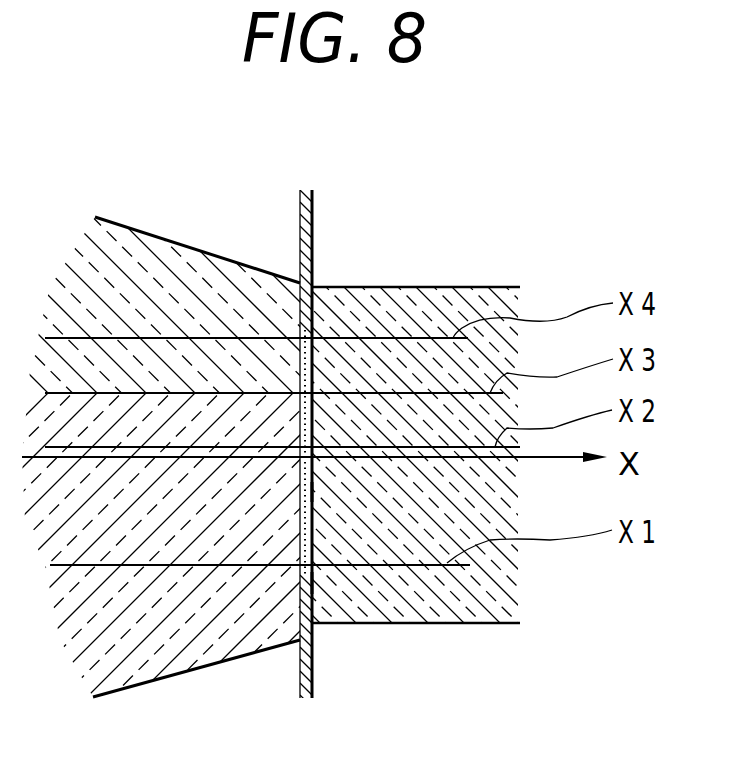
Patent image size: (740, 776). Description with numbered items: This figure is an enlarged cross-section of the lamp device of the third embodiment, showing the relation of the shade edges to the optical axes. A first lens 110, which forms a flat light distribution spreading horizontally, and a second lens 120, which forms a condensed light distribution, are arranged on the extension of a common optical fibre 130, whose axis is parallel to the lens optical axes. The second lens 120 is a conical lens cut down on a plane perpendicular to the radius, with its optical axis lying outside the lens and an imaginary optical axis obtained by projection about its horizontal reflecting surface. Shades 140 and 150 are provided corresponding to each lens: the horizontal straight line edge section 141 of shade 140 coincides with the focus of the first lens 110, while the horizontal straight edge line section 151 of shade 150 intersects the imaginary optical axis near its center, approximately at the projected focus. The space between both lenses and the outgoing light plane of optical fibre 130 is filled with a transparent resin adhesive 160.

The first lens 110 is at (177, 677).
The second lens 120 is at (190, 248).
The optical fibre 130 is at (447, 287).
The shade 140 is at (313, 633).
The horizontal and straight line edge section 141 is at (310, 583).
The shade 150 is at (313, 212).
The horizontal straight edge line section 151 is at (313, 323).
The transparent resin adhesive 160 is at (312, 492).